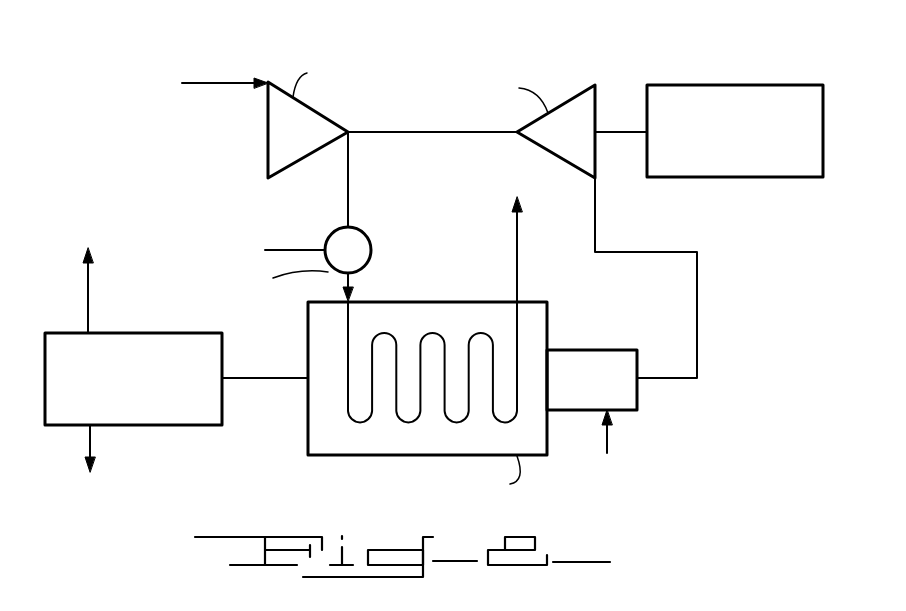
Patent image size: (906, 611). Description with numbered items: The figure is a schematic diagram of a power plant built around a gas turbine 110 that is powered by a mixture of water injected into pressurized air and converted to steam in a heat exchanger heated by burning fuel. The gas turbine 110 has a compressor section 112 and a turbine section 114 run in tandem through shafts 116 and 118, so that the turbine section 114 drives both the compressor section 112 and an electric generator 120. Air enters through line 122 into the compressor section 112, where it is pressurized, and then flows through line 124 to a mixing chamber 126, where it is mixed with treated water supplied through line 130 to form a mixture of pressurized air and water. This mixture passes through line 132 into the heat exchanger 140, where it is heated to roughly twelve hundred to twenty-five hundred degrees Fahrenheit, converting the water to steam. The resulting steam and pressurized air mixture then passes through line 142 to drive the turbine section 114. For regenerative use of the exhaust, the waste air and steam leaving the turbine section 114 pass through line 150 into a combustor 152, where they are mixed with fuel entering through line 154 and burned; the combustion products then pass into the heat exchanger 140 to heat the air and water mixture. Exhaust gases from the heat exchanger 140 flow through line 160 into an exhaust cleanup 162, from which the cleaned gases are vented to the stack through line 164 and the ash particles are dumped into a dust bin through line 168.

The gas turbine 110 is at (421, 121).
The compressor section 112 is at (321, 115).
The turbine section 114 is at (567, 102).
The shaft 116 is at (425, 134).
The shaft 118 is at (621, 131).
The electric generator 120 is at (703, 85).
The line 122 is at (224, 82).
The line 124 is at (348, 176).
The mixing chamber 126 is at (373, 252).
The line 130 is at (269, 249).
The line 132 is at (351, 280).
The heat exchanger 140 is at (441, 302).
The line 142 is at (518, 274).
The line 150 is at (596, 211).
The combustor 152 is at (588, 350).
The line 154 is at (607, 448).
The line 160 is at (263, 378).
The exhaust cleanup 162 is at (150, 333).
The line 164 is at (89, 285).
The line 168 is at (92, 443).